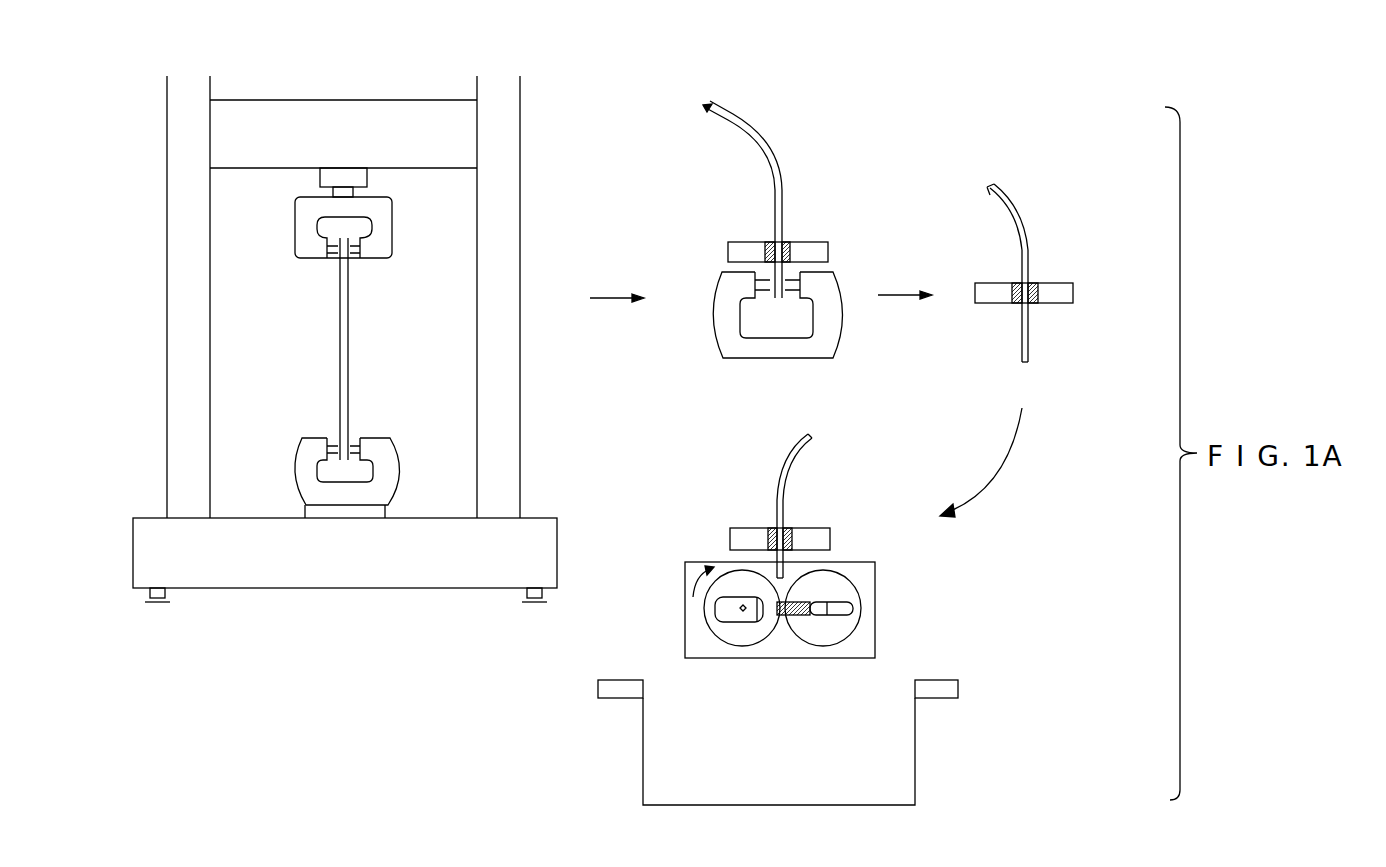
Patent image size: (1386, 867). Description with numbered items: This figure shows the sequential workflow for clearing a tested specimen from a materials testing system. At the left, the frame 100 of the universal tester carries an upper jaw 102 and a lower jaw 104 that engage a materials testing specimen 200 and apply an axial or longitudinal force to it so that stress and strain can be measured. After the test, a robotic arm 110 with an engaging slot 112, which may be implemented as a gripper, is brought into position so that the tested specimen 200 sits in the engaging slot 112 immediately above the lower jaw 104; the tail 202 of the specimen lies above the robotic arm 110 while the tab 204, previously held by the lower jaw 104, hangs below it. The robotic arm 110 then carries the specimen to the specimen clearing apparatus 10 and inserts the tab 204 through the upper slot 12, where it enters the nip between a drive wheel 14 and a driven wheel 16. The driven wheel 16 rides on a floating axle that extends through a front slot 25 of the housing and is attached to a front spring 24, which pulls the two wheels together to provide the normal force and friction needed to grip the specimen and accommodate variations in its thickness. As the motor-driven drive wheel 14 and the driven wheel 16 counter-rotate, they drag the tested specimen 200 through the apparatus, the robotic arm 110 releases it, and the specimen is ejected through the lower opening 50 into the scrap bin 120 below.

The specimen clearing apparatus 10 is at (662, 548).
The upper slot 12 is at (775, 563).
The drive wheel 14 is at (728, 647).
The driven wheel 16 is at (838, 648).
The front spring 24 is at (790, 605).
The front slot 25 is at (855, 607).
The lower opening 50 is at (780, 657).
The frame 100 is at (520, 217).
The upper jaw 102 is at (295, 212).
The lower jaw 104 is at (292, 475).
The robotic arm 110 is at (828, 252).
The engaging slot 112 is at (386, 146).
The scrap bin 120 is at (918, 773).
The materials testing specimen 200 is at (340, 333).
The tail 202 is at (737, 120).
The tab 204 is at (780, 307).